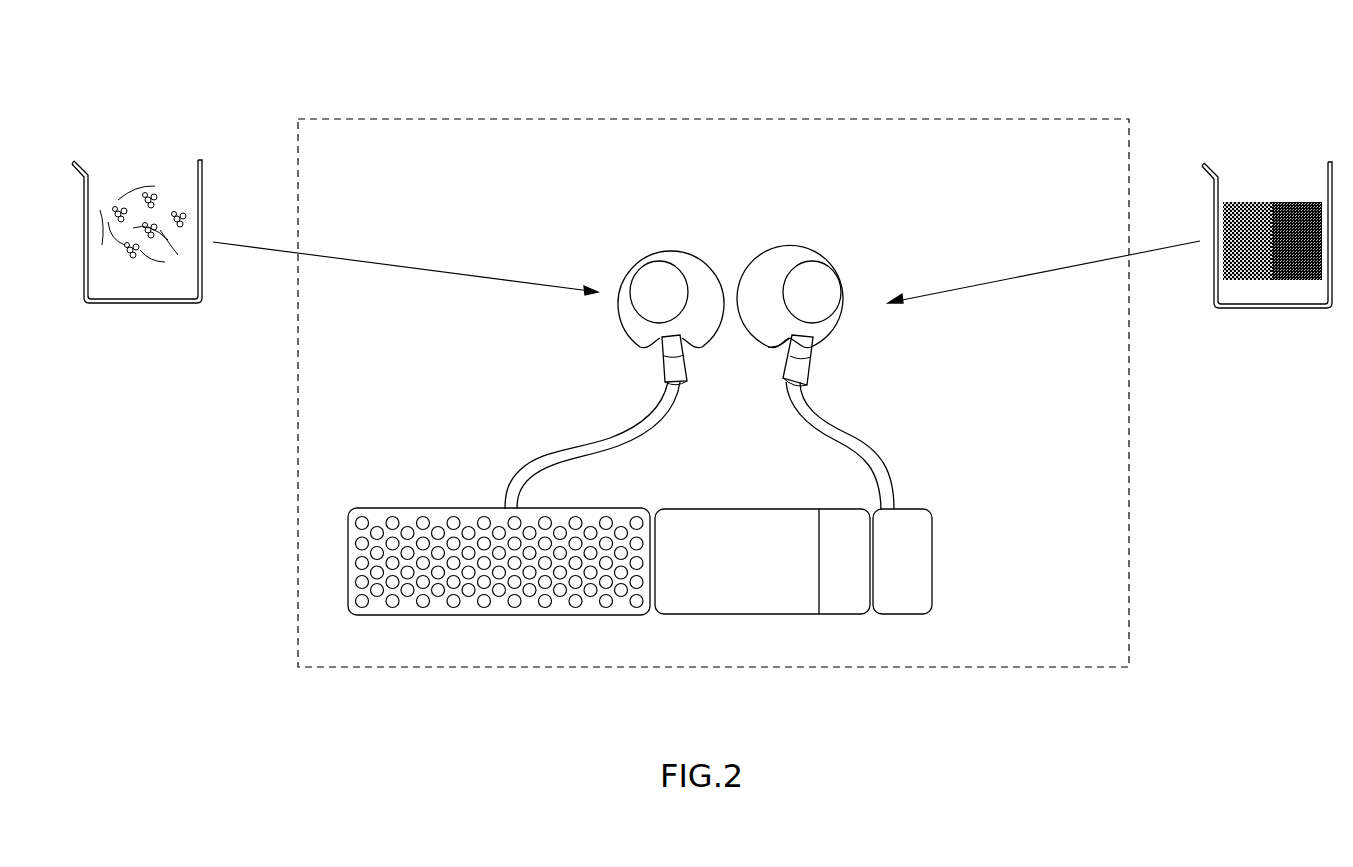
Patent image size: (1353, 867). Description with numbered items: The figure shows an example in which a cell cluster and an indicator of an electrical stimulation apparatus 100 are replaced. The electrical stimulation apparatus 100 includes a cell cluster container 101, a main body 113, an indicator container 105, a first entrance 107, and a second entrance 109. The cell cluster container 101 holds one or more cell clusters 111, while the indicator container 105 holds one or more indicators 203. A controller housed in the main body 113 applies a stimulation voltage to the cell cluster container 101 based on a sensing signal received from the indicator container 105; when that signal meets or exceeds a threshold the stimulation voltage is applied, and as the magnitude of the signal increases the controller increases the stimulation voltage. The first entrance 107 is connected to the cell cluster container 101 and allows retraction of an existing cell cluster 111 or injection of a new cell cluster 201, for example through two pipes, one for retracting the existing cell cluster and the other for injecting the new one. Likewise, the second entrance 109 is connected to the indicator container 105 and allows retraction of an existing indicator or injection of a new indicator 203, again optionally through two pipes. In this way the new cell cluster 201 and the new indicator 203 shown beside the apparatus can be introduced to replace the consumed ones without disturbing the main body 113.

The electrical stimulation apparatus 100 is at (714, 97).
The cell cluster container 101 is at (425, 507).
The indicator container 105 is at (904, 508).
The first entrance 107 is at (671, 250).
The second entrance 109 is at (814, 250).
The cell cluster 111 is at (422, 589).
The main body 113 is at (737, 508).
The cell cluster 201 is at (143, 305).
The indicator 203 is at (1272, 310).